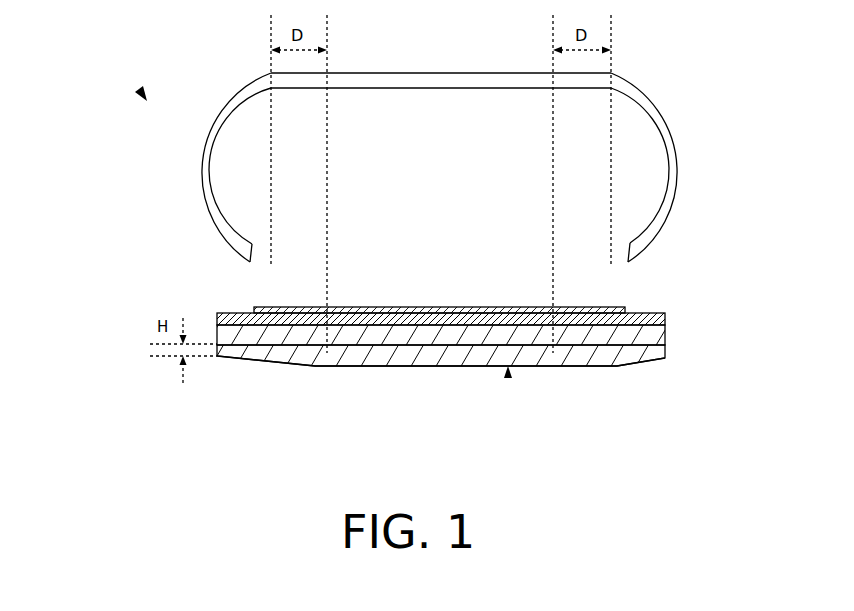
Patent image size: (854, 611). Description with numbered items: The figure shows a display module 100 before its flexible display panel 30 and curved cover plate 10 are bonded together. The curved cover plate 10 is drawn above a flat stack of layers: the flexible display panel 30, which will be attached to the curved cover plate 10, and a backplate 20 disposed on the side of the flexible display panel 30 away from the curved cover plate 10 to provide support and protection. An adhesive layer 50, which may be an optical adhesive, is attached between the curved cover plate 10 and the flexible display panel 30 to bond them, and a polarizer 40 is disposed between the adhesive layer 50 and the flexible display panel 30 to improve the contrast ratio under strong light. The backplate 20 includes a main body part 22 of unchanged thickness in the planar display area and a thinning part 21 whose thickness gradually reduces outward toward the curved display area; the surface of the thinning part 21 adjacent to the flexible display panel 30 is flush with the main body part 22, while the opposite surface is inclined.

The display module 100 is at (141, 92).
The curved cover plate 10 is at (652, 108).
The backplate 20 is at (508, 376).
The thinning part 21 is at (275, 361).
The main body part 22 is at (450, 367).
The flexible display panel 30 is at (665, 335).
The polarizer 40 is at (665, 318).
The adhesive layer 50 is at (625, 308).